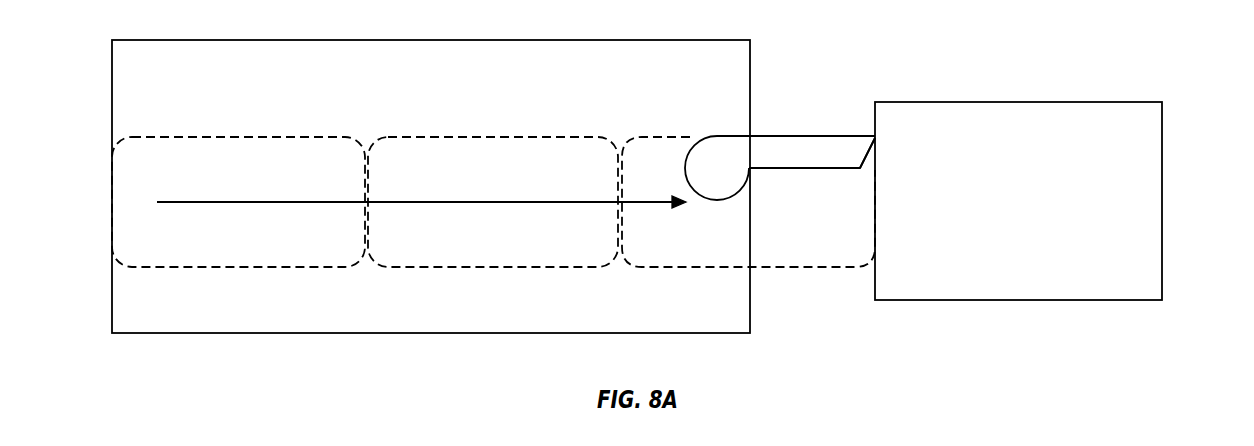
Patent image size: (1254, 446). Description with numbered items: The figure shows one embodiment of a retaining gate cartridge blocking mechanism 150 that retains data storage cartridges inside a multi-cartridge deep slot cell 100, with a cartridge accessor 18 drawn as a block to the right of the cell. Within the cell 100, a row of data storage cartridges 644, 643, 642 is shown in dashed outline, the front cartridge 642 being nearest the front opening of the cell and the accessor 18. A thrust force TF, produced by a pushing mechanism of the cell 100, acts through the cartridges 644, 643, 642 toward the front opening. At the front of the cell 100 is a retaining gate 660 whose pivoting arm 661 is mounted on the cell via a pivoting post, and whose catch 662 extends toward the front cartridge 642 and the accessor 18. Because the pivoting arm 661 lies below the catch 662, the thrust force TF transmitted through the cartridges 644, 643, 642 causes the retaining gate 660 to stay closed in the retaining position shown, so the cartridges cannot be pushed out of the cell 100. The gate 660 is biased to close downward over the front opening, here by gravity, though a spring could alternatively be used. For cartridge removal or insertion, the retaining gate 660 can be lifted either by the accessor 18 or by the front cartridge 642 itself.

The multi-cartridge deep slot cell 100 is at (449, 97).
The retaining gate cartridge blocking mechanism 150 is at (868, 50).
The accessor 18 is at (1020, 300).
The front cartridge 642 is at (780, 267).
The data storage cartridge 643 is at (491, 268).
The data storage cartridge 644 is at (236, 268).
The retaining gate 660 is at (782, 136).
The pivoting arm 661 is at (738, 179).
The catch 662 is at (846, 152).